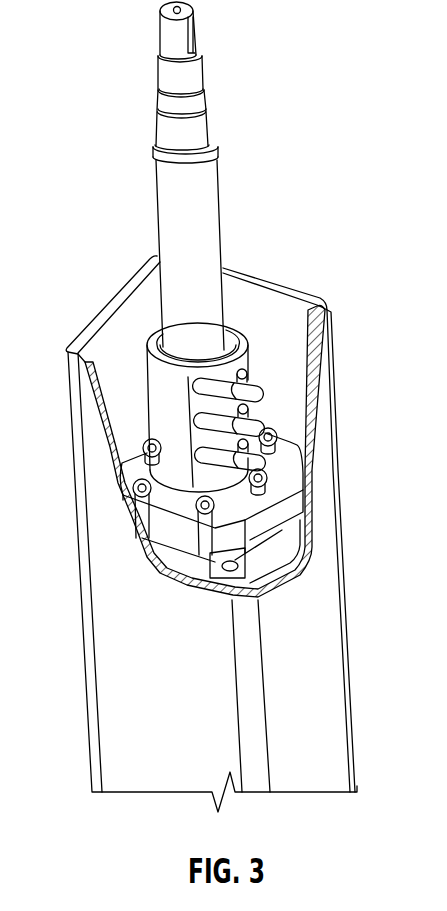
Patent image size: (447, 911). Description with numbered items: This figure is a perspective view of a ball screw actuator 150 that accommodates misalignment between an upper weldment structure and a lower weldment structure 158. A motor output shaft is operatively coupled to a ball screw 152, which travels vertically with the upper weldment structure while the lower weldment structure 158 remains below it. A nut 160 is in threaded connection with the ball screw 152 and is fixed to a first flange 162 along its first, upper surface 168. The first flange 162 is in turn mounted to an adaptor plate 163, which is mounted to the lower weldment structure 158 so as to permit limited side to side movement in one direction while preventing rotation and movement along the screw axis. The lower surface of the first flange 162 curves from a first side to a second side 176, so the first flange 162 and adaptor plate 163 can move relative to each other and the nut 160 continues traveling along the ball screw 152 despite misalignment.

The ball screw actuator 150 is at (255, 124).
The ball screw 152 is at (170, 38).
The lower weldment structure 158 is at (338, 687).
The nut 160 is at (157, 375).
The first flange 162 is at (290, 485).
The adaptor plate 163 is at (282, 538).
The first, upper surface of the first flange 168 is at (278, 437).
The second side of the first flange 176 is at (262, 482).